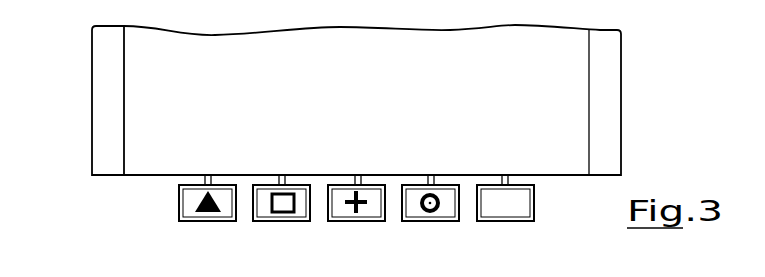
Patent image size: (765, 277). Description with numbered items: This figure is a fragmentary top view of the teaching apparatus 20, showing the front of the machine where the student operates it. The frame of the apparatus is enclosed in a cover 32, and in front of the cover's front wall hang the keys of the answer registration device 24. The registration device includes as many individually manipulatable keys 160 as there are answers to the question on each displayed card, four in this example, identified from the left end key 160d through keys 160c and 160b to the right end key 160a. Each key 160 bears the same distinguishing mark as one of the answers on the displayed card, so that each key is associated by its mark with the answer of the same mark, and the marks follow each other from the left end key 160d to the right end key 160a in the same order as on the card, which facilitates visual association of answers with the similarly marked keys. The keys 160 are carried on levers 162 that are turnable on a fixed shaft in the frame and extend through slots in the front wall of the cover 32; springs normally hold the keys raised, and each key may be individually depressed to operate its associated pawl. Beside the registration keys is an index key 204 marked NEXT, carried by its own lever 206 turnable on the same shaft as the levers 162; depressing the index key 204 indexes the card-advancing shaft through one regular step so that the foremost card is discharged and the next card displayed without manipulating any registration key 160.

The teaching apparatus 20 is at (351, 105).
The cover 32 is at (626, 112).
The answer registration device 24 is at (182, 238).
The keys 160 is at (304, 220).
The right end key 160a is at (443, 222).
The key 160b is at (367, 222).
The key 160c is at (295, 222).
The left end key 160d is at (213, 222).
The levers 162 is at (281, 181).
The index key 204 is at (496, 222).
The lever 206 is at (507, 179).